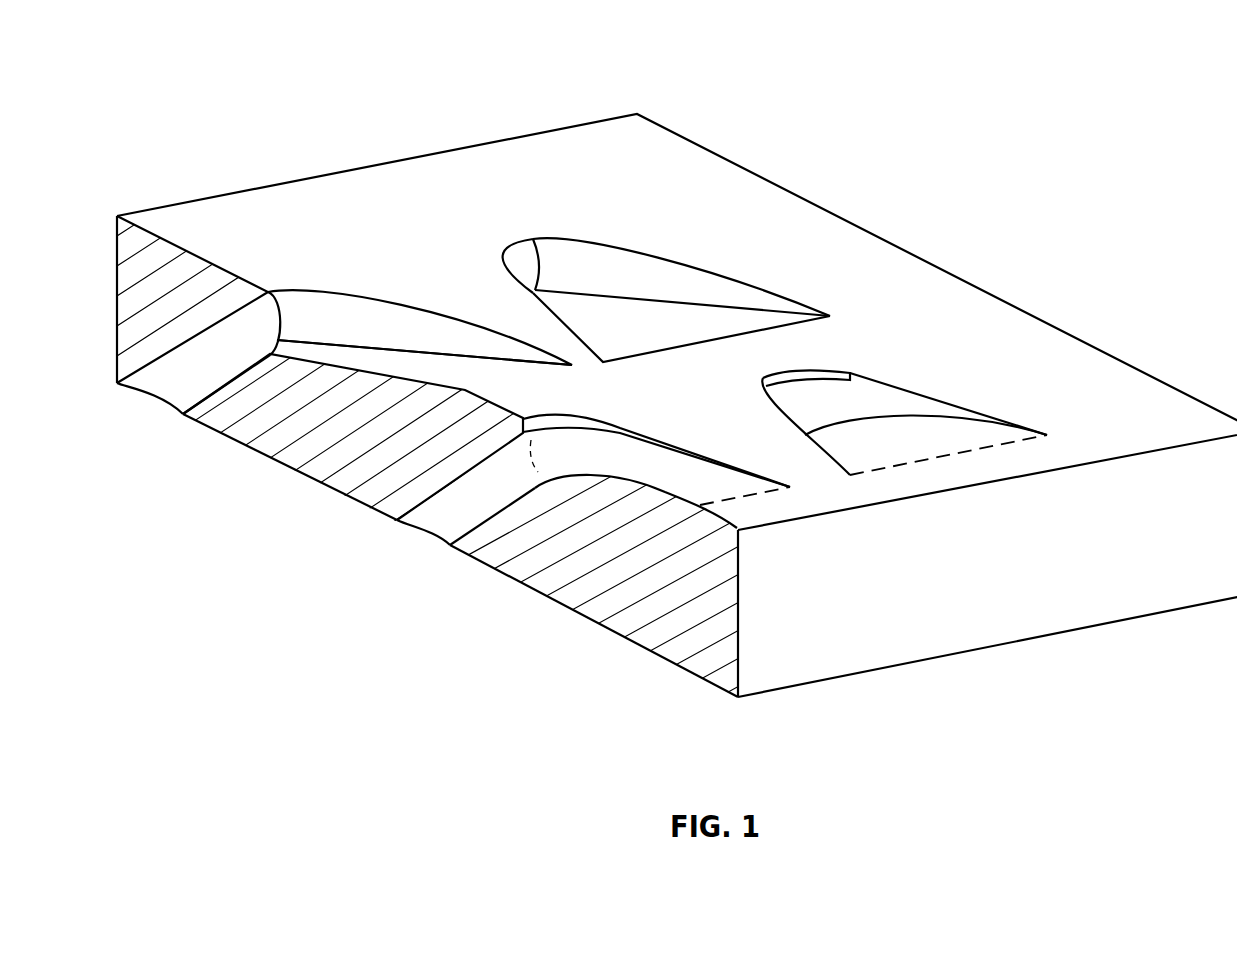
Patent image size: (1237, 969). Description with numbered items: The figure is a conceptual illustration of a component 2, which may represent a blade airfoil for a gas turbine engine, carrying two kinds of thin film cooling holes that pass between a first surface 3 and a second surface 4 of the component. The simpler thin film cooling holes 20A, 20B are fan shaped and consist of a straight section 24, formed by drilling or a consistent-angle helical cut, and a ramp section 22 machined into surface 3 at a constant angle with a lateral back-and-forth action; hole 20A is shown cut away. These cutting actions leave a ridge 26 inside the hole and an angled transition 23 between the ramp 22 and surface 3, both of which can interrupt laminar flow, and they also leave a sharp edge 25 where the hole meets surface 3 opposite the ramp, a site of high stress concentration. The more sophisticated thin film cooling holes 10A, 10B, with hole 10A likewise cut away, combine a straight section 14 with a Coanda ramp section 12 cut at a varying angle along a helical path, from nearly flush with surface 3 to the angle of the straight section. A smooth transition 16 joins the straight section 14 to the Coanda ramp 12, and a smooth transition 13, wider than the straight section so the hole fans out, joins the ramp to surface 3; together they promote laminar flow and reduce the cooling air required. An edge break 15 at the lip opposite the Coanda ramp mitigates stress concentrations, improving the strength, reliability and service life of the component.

The component 2 is at (192, 106).
The first surface 3 is at (373, 227).
The second surface 4 is at (343, 502).
The thin film cooling hole 10A is at (680, 457).
The thin film cooling hole 10B is at (913, 408).
The Coanda ramp section 12 is at (665, 493).
The smooth transition 13 is at (745, 493).
The straight section 14 is at (485, 517).
The edge break 15 is at (573, 427).
The smooth transition 16 is at (538, 473).
The thin film cooling hole 20A is at (422, 337).
The thin film cooling hole 20B is at (650, 273).
The ramp section 22 is at (378, 358).
The angled transition 23 is at (520, 378).
The straight section 24 is at (222, 377).
The sharp edge 25 is at (293, 287).
The ridge 26 is at (281, 328).